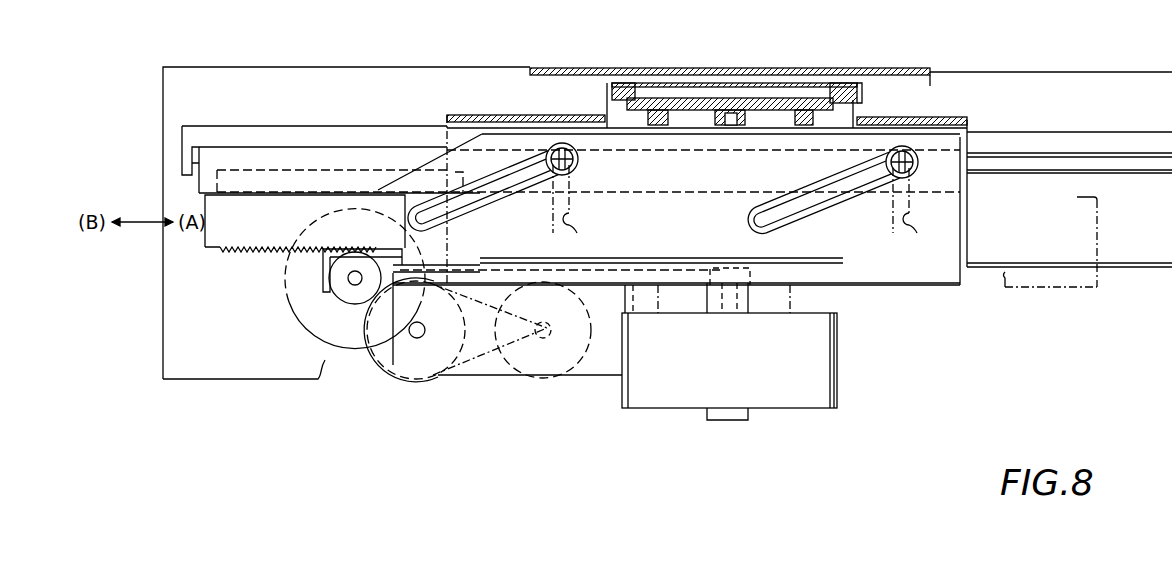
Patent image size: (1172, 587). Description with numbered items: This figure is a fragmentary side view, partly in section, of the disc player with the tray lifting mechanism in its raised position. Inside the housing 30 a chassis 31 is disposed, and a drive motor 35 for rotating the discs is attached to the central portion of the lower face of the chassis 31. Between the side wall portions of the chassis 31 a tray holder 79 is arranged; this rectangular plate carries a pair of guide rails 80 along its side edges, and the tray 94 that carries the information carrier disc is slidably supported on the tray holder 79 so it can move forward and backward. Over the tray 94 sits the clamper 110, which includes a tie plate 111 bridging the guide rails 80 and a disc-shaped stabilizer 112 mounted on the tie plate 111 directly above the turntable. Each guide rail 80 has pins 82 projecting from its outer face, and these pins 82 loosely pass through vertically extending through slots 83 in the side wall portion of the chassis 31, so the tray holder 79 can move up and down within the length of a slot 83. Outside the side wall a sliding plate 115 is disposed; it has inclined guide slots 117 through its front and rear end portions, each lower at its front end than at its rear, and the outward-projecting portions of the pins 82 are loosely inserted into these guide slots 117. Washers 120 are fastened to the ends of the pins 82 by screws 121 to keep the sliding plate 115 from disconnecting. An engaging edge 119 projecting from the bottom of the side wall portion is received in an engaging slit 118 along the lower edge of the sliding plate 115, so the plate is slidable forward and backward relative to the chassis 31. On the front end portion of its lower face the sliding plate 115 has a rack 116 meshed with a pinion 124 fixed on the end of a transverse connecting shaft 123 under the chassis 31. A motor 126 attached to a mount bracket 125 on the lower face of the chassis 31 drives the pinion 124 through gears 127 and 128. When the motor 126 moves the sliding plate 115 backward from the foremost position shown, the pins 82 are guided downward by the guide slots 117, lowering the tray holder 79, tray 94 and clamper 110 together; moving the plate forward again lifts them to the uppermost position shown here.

The housing 30 is at (437, 66).
The tray 94 is at (257, 125).
The tray holder 79 is at (332, 170).
The guide rails 80 is at (672, 193).
The chassis 31 is at (1047, 267).
The rack 116 is at (248, 253).
The connecting shaft 123 is at (352, 280).
The pinion 124 is at (360, 305).
The gear 127 is at (357, 348).
The gear 128 is at (418, 377).
The mount bracket 125 is at (490, 377).
The motor 126 is at (592, 350).
The engaging slit 118 is at (595, 265).
The engaging edge 119 is at (683, 262).
The drive motor 35 is at (838, 360).
The sliding plate 115 is at (893, 285).
The stabilizer 112 is at (673, 106).
The clamper 110 is at (813, 88).
The tie plate 111 is at (860, 97).
The washers 120 is at (578, 157).
The screws 121 is at (578, 165).
The guide slots 117 is at (470, 210).
The pins 82 is at (566, 176).
The through slots 83 is at (570, 225).